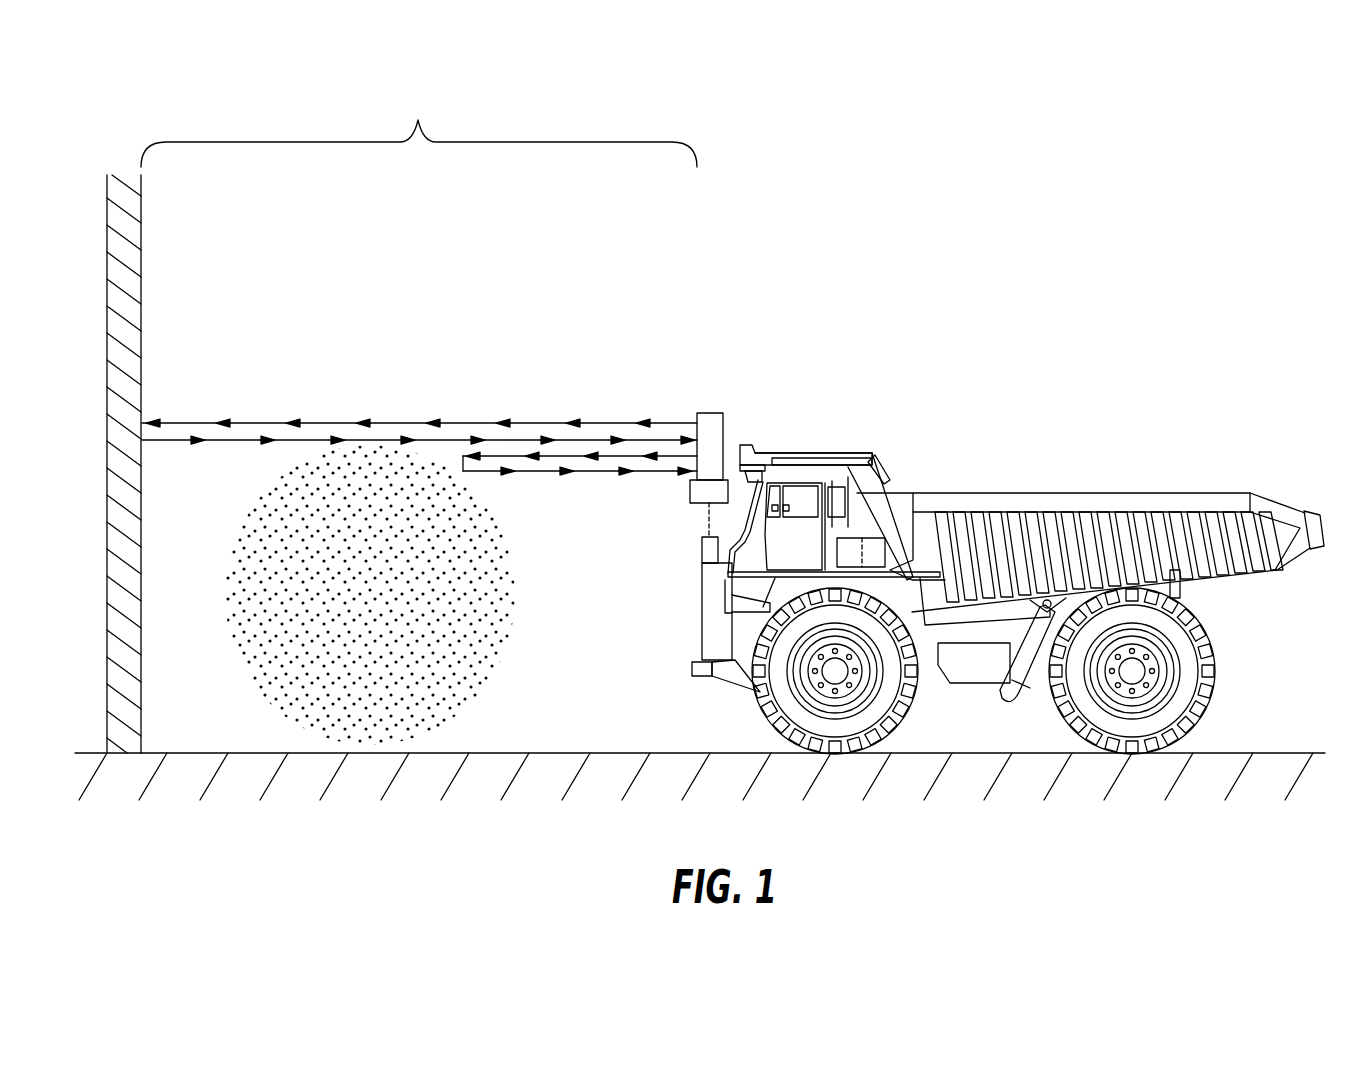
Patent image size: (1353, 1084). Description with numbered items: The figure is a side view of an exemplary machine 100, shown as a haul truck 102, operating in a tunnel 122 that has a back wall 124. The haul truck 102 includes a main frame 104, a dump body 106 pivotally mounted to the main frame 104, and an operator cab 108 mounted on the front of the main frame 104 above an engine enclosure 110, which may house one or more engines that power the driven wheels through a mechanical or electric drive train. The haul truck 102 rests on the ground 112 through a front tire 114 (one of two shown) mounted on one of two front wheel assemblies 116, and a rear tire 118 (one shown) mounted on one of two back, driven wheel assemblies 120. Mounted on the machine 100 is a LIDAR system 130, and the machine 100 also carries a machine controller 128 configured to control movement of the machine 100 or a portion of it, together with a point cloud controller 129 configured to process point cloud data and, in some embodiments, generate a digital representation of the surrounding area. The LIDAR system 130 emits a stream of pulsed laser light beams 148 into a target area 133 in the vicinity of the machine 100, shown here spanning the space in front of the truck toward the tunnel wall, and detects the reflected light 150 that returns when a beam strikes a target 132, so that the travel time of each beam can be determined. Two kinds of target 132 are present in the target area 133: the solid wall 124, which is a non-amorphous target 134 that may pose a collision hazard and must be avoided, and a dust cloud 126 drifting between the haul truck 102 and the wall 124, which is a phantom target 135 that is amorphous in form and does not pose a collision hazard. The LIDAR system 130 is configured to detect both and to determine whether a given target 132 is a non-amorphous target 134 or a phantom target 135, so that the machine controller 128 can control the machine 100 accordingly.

The machine 100 is at (1024, 599).
The haul truck 102 is at (1024, 599).
The main frame 104 is at (925, 648).
The dump body 106 is at (1053, 500).
The operator cab 108 is at (832, 476).
The engine enclosure 110 is at (765, 602).
The ground 112 is at (617, 794).
The front tires 114 is at (795, 743).
The front wheel assemblies 116 is at (843, 705).
The rear tires 118 is at (1148, 745).
The back wheel assemblies 120 is at (1158, 700).
The tunnel 122 is at (419, 438).
The back wall 124 is at (185, 464).
The dust cloud 126 is at (441, 595).
The machine controller 128 is at (860, 538).
The point cloud controller 129 is at (882, 560).
The LIDAR system 130 is at (710, 413).
The target 132 is at (382, 464).
The target area 133 is at (419, 130).
The non-amorphous target 134 is at (188, 296).
The phantom target 135 is at (445, 688).
The laser light beams 148 is at (400, 420).
The reflected light 150 is at (455, 438).